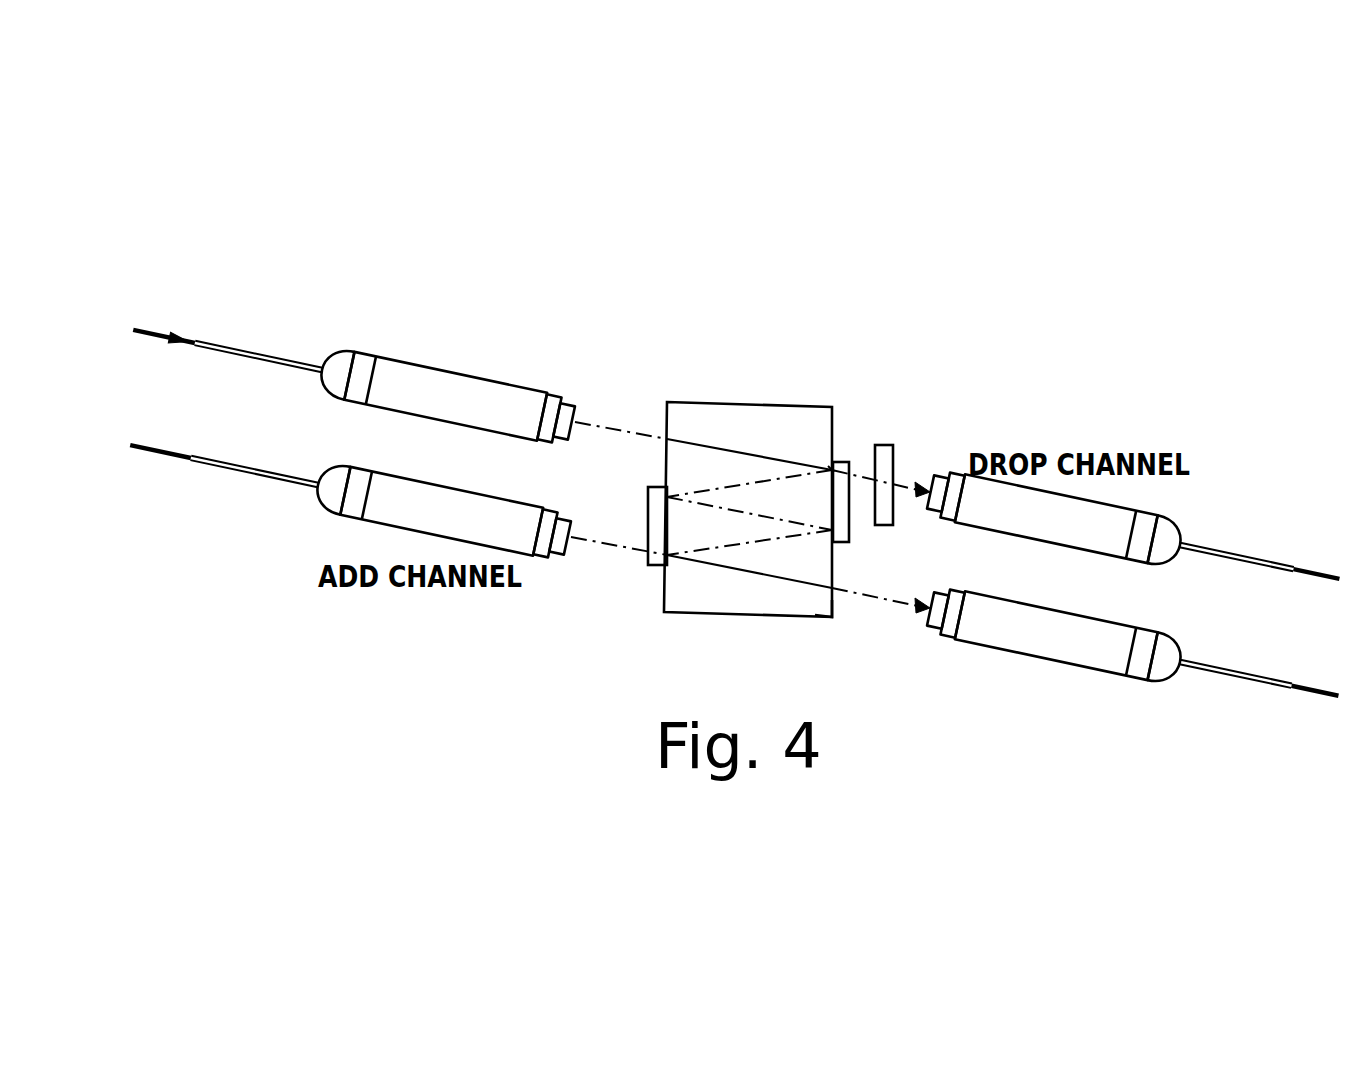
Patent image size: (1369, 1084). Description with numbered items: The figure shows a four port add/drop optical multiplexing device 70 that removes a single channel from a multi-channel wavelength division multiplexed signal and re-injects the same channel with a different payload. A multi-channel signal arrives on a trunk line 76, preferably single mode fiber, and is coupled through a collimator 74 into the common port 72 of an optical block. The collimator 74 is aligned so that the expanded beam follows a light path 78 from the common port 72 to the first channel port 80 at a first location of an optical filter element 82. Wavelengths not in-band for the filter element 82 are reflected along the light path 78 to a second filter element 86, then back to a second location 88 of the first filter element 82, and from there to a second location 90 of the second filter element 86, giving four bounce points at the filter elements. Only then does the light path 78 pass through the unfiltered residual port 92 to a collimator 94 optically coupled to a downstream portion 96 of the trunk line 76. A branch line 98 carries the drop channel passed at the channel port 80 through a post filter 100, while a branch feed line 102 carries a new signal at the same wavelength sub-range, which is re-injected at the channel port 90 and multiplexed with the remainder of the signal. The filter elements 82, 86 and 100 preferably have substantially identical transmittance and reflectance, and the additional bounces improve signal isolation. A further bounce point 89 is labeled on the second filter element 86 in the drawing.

The add/drop optical multiplexing device 70 is at (783, 390).
The common port 72 is at (667, 437).
The collimator 74 is at (507, 378).
The trunk line 76 is at (226, 343).
The light path 78 is at (743, 447).
The first channel port 80 is at (830, 470).
The optical filter element 82 is at (848, 458).
The second filter element 86 is at (647, 558).
The second location of first filter element 88 is at (832, 530).
The reflection point 89 is at (667, 497).
The second location of second filter element 90 is at (667, 555).
The unfiltered residual port 92 is at (832, 613).
The collimator 94 is at (1113, 657).
The downstream portion of trunk line 96 is at (1215, 675).
The branch line 98 is at (1263, 558).
The post filter 100 is at (892, 446).
The branch feed line 102 is at (213, 470).